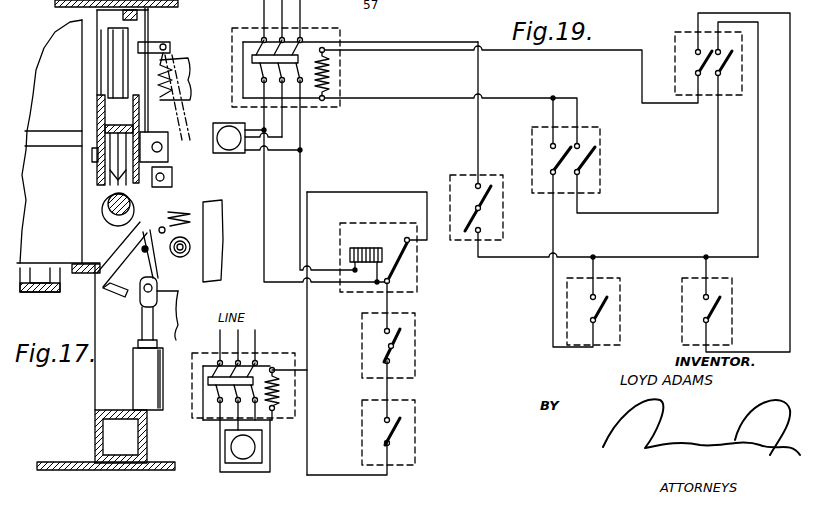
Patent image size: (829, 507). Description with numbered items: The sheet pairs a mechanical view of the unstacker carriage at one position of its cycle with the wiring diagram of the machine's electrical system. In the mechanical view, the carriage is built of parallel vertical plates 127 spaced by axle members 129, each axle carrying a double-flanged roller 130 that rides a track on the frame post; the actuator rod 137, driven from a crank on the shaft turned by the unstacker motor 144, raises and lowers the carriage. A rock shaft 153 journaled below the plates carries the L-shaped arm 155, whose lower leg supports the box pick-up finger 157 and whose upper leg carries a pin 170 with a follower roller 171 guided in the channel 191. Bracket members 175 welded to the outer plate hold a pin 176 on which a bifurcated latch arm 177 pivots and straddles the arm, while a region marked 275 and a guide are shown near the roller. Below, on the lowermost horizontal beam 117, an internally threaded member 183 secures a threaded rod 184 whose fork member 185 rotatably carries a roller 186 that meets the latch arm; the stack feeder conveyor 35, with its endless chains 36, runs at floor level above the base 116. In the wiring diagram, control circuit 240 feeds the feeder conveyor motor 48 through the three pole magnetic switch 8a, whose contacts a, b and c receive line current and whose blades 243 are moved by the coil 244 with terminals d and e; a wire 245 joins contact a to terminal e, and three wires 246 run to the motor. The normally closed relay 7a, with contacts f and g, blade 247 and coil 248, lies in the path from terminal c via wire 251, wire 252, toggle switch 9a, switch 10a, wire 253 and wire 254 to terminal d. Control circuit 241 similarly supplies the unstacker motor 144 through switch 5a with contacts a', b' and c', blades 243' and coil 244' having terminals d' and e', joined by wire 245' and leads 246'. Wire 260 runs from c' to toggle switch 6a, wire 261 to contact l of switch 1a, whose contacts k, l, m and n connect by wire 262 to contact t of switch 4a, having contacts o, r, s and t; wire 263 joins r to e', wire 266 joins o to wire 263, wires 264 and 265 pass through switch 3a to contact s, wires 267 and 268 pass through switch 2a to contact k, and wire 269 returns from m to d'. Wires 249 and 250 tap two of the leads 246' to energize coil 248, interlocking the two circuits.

In FIG. 17, the actuator rod 137 is at (97, 20).
In FIG. 17, the vertical plates 127 is at (100, 100).
In FIG. 17, the double-flanged wheel or roller 130 is at (107, 133).
In FIG. 17, the axle members 129 is at (95, 155).
In FIG. 17, the bracket members 175 is at (165, 135).
In FIG. 17, the pin 176 is at (165, 147).
In FIG. 17, the bifurcated latch arm 177 is at (163, 165).
In FIG. 17, the guide 275 is at (51, 188).
In FIG. 17, the rock shaft 153 is at (118, 216).
In FIG. 17, the L-shaped arm 155 is at (107, 242).
In FIG. 17, the stack feeder conveyor 35 is at (50, 262).
In FIG. 17, the endless chains 36 is at (40, 291).
In FIG. 17, the box pick-up finger or bar 157 is at (108, 294).
In FIG. 17, the roller 186 is at (152, 264).
In FIG. 17, the fork member 185 is at (160, 293).
In FIG. 17, the threaded rod 184 is at (150, 320).
In FIG. 17, the channel 191 is at (213, 213).
In FIG. 17, the pin 170 is at (183, 247).
In FIG. 17, the roller or follower member 171 is at (177, 250).
In FIG. 17, the internally threaded member 183 is at (138, 380).
In FIG. 17, the lowermost horizontal beams 117 is at (95, 431).
In FIG. 17, the base plate 116 is at (60, 463).
In FIG. 19, the unstacker motor 144 is at (214, 130).
In FIG. 19, the three pole magnetic switch 5a is at (240, 28).
In FIG. 19, the contact point a' is at (269, 21).
In FIG. 19, the contact point b' is at (287, 21).
In FIG. 19, the contact point c' is at (305, 21).
In FIG. 19, the coil terminal d' is at (342, 36).
In FIG. 19, the coil terminal e' is at (336, 113).
In FIG. 19, the blades 243' is at (248, 65).
In FIG. 19, the wire 245' is at (242, 51).
In FIG. 19, the magnetic coil 244' is at (348, 74).
In FIG. 19, the wires 246' is at (295, 132).
In FIG. 19, the wire 250 is at (300, 163).
In FIG. 19, the wire 249 is at (264, 172).
In FIG. 19, the wire 269 is at (432, 38).
In FIG. 19, the control circuit 241 is at (494, 38).
In FIG. 19, the wire 260 is at (478, 130).
In FIG. 19, the wire 266 is at (553, 117).
In FIG. 19, the wire 263 is at (577, 117).
In FIG. 19, the wire 265 is at (553, 316).
In FIG. 19, the wire 261 is at (517, 258).
In FIG. 19, the wire 262 is at (660, 213).
In FIG. 19, the wire 264 is at (596, 266).
In FIG. 19, the wire 267 is at (704, 265).
In FIG. 19, the wire 268 is at (756, 345).
In FIG. 19, the contact o is at (553, 146).
In FIG. 19, the contact r is at (577, 146).
In FIG. 19, the contact s is at (553, 172).
In FIG. 19, the contact t is at (577, 172).
In FIG. 19, the two pole switch 4a is at (600, 155).
In FIG. 19, the manually operated single pole toggle switch 6a is at (503, 212).
In FIG. 19, the two pole normally closed switch 1a is at (672, 38).
In FIG. 19, the contact k is at (698, 52).
In FIG. 19, the contact l is at (724, 47).
In FIG. 19, the contact m is at (698, 73).
In FIG. 19, the contact n is at (718, 73).
In FIG. 19, the single pole switch 3a is at (620, 300).
In FIG. 19, the single pole normally closed switch 2a is at (732, 296).
In FIG. 19, the normally closed relay switch 7a is at (347, 293).
In FIG. 19, the magnetic coil 248 is at (360, 248).
In FIG. 19, the blade 247 is at (400, 255).
In FIG. 19, the contact f is at (410, 236).
In FIG. 19, the contact g is at (391, 280).
In FIG. 19, the wire 252 is at (390, 303).
In FIG. 19, the wire 251 is at (307, 296).
In FIG. 19, the manually operated single pole toggle switch 9a is at (415, 355).
In FIG. 19, the wire 253 is at (387, 390).
In FIG. 19, the single pole normally closed switch 10a is at (415, 412).
In FIG. 19, the wire 254 is at (326, 475).
In FIG. 19, the control circuit 240 is at (440, 371).
In FIG. 19, the three pole magnetic switch 8a is at (213, 353).
In FIG. 19, the contact point a is at (225, 348).
In FIG. 19, the contact point b is at (242, 348).
In FIG. 19, the contact point c is at (260, 348).
In FIG. 19, the coil terminal d is at (280, 356).
In FIG. 19, the coil terminal e is at (283, 423).
In FIG. 19, the blades 243 is at (204, 394).
In FIG. 19, the wire 245 is at (216, 408).
In FIG. 19, the magnetic coil 244 is at (305, 396).
In FIG. 19, the wires 246 is at (259, 436).
In FIG. 19, the feeder conveyor motor 48 is at (252, 448).